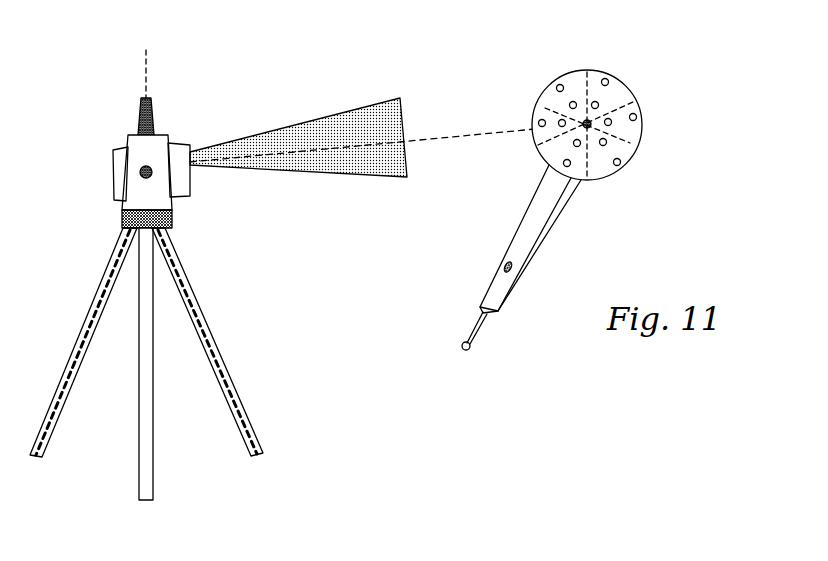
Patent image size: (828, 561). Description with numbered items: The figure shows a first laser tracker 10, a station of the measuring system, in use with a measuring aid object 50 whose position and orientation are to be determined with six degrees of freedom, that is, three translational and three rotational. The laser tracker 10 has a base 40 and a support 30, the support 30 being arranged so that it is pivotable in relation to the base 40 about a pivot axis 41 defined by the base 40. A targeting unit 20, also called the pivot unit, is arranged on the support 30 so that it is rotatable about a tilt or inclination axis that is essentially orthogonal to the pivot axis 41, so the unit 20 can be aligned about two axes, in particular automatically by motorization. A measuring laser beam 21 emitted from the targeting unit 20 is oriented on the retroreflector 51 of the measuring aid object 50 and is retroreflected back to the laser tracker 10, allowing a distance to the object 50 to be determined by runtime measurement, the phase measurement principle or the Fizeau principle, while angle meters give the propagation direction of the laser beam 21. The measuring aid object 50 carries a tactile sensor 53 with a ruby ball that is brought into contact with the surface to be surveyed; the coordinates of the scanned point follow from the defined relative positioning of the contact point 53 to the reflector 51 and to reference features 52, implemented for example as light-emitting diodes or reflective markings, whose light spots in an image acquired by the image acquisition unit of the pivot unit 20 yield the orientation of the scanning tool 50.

The laser tracker 10 is at (117, 62).
The targeting unit 20 is at (120, 153).
The laser beam 21 is at (447, 138).
The support 30 is at (152, 152).
The base 40 is at (122, 216).
The pivot axis 41 is at (148, 72).
The measuring aid object 50 is at (575, 48).
The retroreflector 51 is at (592, 124).
The reference features 52 is at (560, 86).
The tactile sensor 53 is at (470, 350).